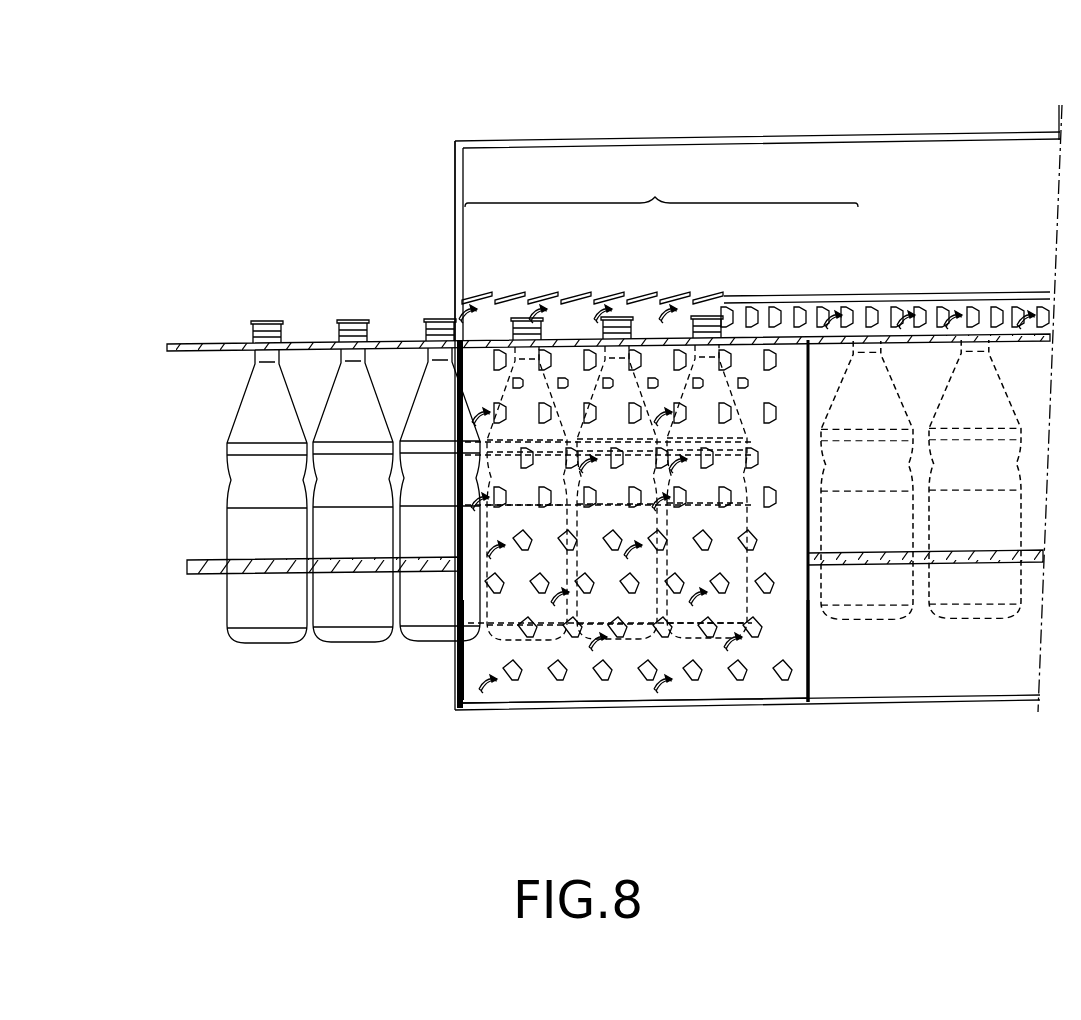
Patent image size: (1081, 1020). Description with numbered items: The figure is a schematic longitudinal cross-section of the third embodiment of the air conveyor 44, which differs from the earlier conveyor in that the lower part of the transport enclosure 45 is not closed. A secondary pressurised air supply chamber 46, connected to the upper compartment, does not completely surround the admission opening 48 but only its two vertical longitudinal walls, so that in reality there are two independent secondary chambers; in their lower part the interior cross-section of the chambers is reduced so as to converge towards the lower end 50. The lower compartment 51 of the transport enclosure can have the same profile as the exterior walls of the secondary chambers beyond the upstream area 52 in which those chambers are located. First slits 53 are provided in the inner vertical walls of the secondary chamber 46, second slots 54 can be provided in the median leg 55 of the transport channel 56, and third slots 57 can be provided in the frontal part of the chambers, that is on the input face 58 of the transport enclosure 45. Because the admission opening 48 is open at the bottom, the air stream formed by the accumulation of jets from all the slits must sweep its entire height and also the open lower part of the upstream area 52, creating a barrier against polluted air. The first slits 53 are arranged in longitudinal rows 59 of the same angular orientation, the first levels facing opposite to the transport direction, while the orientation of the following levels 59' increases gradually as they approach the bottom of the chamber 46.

The air conveyor 44 is at (960, 119).
The transport enclosure 45 is at (565, 138).
The secondary pressurised air supply chamber 46 is at (731, 690).
The admission opening 48 is at (462, 640).
The lower end 50 is at (507, 710).
The lower compartment 51 is at (970, 670).
The upstream area 52 is at (756, 237).
The first slits 53 is at (758, 458).
The second slots 54 is at (538, 300).
The median leg 55 is at (605, 300).
The transport channel 56 is at (785, 292).
The third slots 57 is at (462, 610).
The input face 58 is at (612, 708).
The longitudinal rows 59 is at (848, 521).
The following levels 59' is at (851, 651).